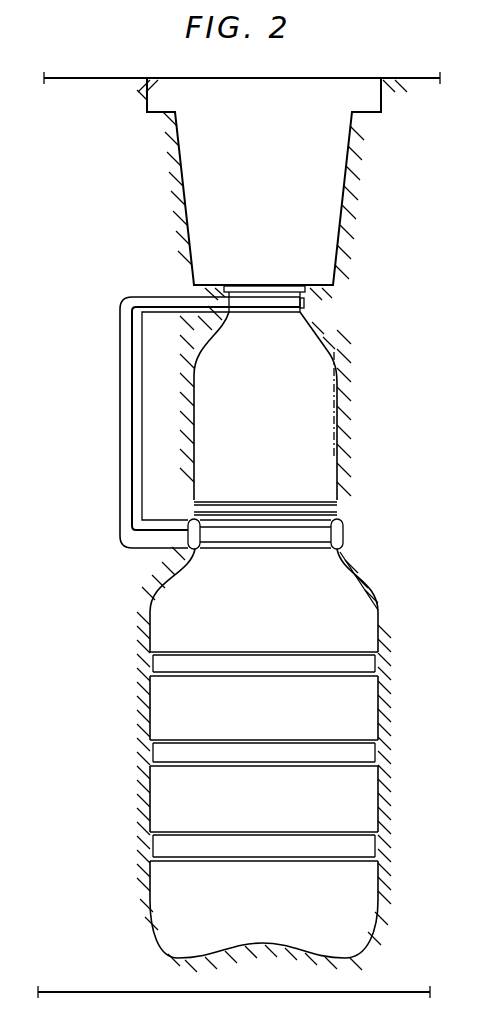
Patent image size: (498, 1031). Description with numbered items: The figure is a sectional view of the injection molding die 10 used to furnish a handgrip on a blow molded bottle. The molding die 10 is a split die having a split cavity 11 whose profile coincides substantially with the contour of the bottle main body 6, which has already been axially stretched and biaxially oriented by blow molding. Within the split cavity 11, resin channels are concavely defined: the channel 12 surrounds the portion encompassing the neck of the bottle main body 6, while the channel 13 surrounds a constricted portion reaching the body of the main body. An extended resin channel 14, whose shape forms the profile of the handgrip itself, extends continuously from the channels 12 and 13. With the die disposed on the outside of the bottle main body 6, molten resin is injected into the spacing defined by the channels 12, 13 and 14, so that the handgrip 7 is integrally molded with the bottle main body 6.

The molding die 10 is at (404, 75).
The resin channel 12 is at (305, 305).
The handgrip 7 is at (130, 320).
The extended resin channel 14 is at (128, 386).
The split cavity 11 is at (314, 334).
The bottle main body 6 is at (338, 396).
The resin channel 13 is at (344, 534).